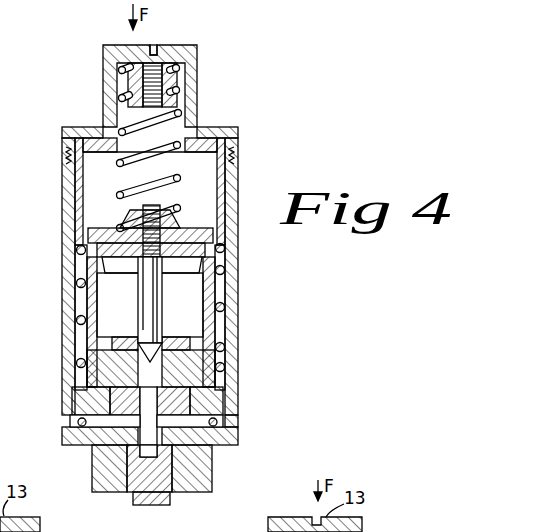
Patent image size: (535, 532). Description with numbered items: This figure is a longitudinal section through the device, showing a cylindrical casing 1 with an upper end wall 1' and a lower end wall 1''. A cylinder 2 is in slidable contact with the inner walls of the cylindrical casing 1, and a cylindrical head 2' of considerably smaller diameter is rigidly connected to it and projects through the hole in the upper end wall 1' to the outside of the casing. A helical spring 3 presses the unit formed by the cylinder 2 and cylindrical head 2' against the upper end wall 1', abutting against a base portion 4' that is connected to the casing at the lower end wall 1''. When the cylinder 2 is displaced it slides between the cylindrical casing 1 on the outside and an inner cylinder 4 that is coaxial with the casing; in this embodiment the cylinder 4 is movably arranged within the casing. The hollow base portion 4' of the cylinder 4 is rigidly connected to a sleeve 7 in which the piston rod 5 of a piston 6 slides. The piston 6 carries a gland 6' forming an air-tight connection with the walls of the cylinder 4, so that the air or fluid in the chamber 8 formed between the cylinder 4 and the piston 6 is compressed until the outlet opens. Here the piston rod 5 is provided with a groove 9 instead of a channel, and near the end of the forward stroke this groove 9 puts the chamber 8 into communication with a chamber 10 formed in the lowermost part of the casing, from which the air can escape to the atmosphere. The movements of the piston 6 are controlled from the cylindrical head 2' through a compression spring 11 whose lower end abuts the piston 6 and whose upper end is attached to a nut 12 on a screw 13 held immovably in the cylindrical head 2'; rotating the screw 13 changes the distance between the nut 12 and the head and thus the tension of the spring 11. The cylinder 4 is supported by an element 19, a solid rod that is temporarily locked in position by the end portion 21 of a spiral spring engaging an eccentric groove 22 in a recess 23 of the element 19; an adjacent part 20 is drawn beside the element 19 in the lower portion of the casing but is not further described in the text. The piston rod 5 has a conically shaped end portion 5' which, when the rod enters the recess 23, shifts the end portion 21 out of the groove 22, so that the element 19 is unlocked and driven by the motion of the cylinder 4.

The cylindrical casing 1 is at (129, 291).
The upper end wall 1' is at (141, 118).
The lower end wall 1'' is at (252, 430).
The cylinder 2 is at (176, 191).
The cylindrical head 2' is at (127, 86).
The helical spring 3 is at (224, 282).
The cylinder 4 is at (240, 317).
The base portion 4' is at (122, 368).
The piston rod 5 is at (164, 300).
The conically shaped end portion 5' is at (205, 352).
The piston 6 is at (150, 230).
The gland 6' is at (116, 258).
The sleeve 7 is at (168, 395).
The chamber 8 is at (107, 294).
The groove 9 is at (138, 306).
The chamber 10 is at (225, 410).
The compression spring 11 is at (126, 170).
The nut 12 is at (178, 100).
The screw 13 is at (160, 52).
The element 19 is at (157, 505).
The bottom block 20 is at (102, 467).
The end portion 21 is at (85, 423).
The groove 22 is at (163, 423).
The recess 23 is at (143, 411).